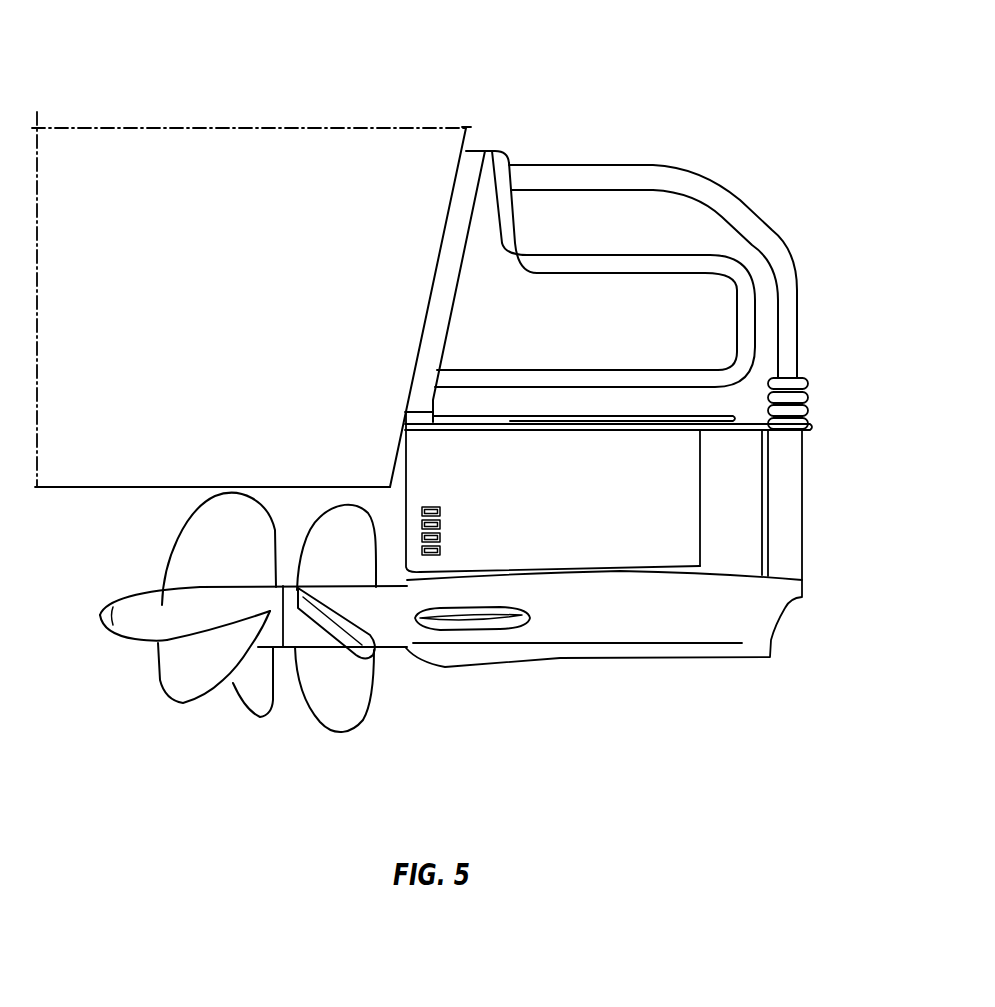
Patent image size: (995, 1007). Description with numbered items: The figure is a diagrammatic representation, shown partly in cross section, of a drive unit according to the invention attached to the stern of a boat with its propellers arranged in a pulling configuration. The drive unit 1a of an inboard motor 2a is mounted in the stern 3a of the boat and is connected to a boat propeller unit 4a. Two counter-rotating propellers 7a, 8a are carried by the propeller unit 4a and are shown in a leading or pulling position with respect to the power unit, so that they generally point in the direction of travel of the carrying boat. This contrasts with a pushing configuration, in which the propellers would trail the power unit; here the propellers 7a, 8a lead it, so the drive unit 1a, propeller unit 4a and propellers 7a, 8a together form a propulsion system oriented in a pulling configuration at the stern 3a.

The drive unit 1a is at (464, 414).
The inboard motor 2a is at (220, 135).
The stern 3a is at (472, 133).
The boat propeller unit 4a is at (823, 344).
The propeller 7a is at (337, 713).
The propeller 8a is at (257, 700).